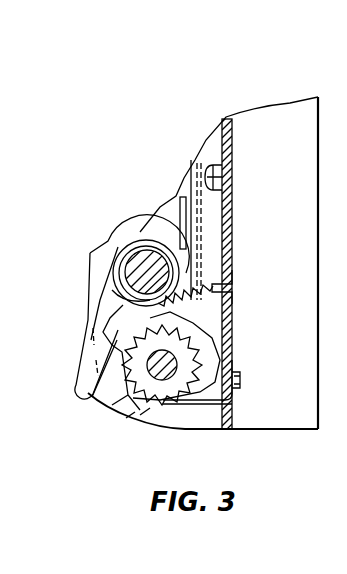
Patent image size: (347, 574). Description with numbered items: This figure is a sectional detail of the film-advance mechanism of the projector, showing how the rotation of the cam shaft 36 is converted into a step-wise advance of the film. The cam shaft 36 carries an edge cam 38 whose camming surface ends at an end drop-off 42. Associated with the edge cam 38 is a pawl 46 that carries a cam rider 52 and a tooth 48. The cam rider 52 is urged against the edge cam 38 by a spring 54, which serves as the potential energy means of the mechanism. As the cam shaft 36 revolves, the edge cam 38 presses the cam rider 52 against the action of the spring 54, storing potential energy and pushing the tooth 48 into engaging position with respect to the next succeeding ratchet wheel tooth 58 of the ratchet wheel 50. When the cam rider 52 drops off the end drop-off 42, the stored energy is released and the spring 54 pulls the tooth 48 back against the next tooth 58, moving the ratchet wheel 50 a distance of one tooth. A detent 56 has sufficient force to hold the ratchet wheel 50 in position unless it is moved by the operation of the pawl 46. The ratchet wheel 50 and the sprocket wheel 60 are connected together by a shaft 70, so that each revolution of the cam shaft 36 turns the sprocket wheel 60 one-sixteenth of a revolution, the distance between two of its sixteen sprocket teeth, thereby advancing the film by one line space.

The cam shaft 36 is at (146, 250).
The edge cam 38 is at (121, 246).
The end drop-off 42 is at (112, 290).
The pawl 46 is at (93, 326).
The tooth 48 is at (122, 356).
The ratchet wheel 50 is at (190, 360).
The cam rider 52 is at (130, 320).
The spring 54 is at (186, 297).
The detent 56 is at (170, 418).
The ratchet wheel tooth 58 is at (114, 408).
The sprocket wheel 60 is at (143, 418).
The shaft 70 is at (128, 420).